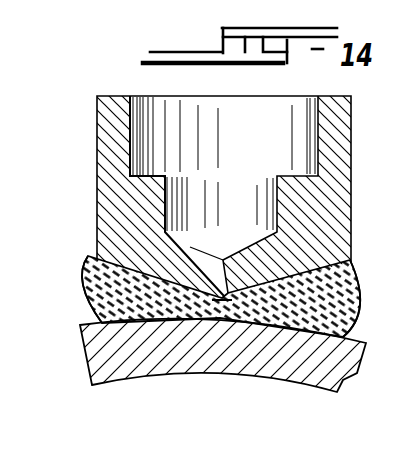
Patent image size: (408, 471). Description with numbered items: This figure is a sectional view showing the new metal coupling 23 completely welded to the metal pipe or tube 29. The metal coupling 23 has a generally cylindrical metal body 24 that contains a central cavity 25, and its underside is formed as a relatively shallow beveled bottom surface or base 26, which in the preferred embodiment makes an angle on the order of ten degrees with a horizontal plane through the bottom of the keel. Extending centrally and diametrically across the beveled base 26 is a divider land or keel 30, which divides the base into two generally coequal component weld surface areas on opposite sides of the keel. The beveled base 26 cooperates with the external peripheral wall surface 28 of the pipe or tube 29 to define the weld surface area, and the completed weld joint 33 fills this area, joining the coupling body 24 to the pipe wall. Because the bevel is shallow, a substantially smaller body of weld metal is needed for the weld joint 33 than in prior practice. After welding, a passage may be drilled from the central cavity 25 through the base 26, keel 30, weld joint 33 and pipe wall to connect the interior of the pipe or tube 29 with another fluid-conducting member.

The metal coupling 23 is at (250, 183).
The generally cylindrical metal body 24 is at (343, 162).
The central cavity 25 is at (262, 120).
The beveled bottom surface or base 26 is at (108, 259).
The external peripheral wall surface 28 is at (352, 323).
The metal pipe or tube 29 is at (335, 363).
The divider land or keel 30 is at (221, 302).
The weld joint 33 is at (205, 273).